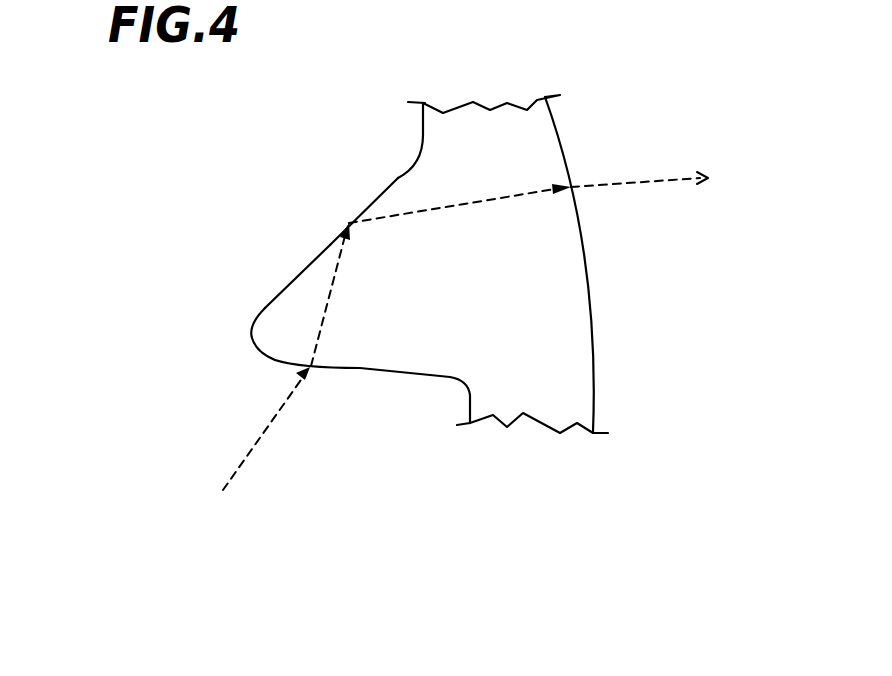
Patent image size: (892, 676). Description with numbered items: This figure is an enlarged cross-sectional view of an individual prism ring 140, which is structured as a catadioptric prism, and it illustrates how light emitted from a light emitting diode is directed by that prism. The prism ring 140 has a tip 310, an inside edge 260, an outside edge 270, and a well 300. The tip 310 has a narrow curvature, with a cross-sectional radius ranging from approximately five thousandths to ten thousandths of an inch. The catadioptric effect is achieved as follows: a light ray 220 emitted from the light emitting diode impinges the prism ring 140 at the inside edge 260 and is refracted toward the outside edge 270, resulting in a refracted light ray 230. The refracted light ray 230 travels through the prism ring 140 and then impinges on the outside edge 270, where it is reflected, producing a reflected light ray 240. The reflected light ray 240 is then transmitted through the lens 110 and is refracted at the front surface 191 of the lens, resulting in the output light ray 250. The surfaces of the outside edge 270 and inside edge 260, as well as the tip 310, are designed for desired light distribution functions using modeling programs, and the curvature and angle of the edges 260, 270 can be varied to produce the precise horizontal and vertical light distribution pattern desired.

The lens 110 is at (535, 133).
The prism ring 140 is at (322, 262).
The front surface 191 is at (600, 322).
The light ray 220 is at (268, 427).
The refracted light ray 230 is at (328, 305).
The reflected light ray 240 is at (442, 207).
The output light ray 250 is at (632, 182).
The inside edge 260 is at (382, 373).
The outside edge 270 is at (382, 188).
The well 300 is at (470, 387).
The tip 310 is at (250, 333).